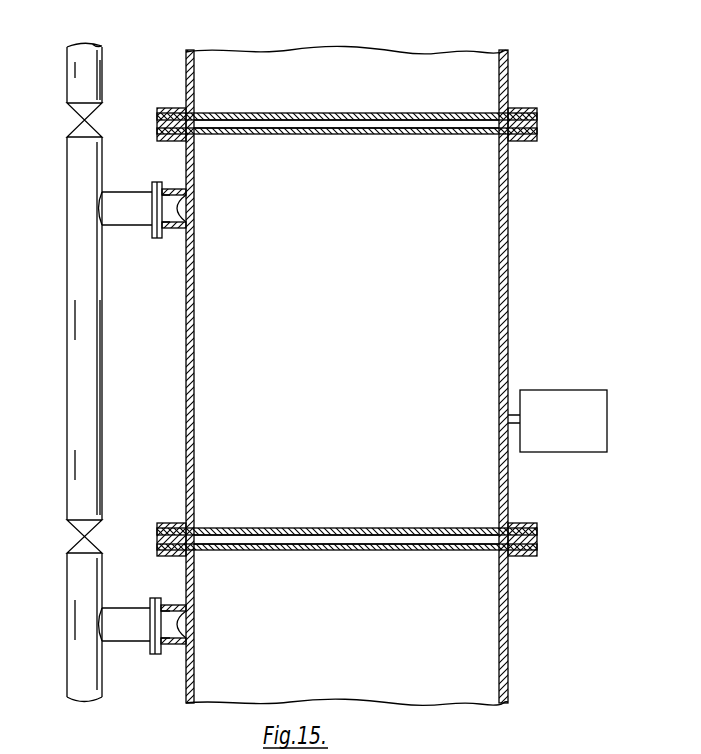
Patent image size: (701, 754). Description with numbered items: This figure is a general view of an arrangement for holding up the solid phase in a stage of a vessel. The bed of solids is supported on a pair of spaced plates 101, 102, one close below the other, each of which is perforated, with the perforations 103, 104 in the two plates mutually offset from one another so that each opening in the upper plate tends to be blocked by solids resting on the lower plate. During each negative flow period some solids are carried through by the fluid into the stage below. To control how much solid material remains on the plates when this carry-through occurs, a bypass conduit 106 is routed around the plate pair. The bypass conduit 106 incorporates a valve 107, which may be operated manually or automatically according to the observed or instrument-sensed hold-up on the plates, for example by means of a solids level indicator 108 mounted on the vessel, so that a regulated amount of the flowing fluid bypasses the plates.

The upper plate 101 is at (257, 113).
The lower plate 102 is at (357, 136).
The perforations 103 is at (268, 136).
The perforations 104 is at (400, 113).
The bypass conduit 106 is at (70, 313).
The valve 107 is at (79, 537).
The solids level indicator 108 is at (562, 388).